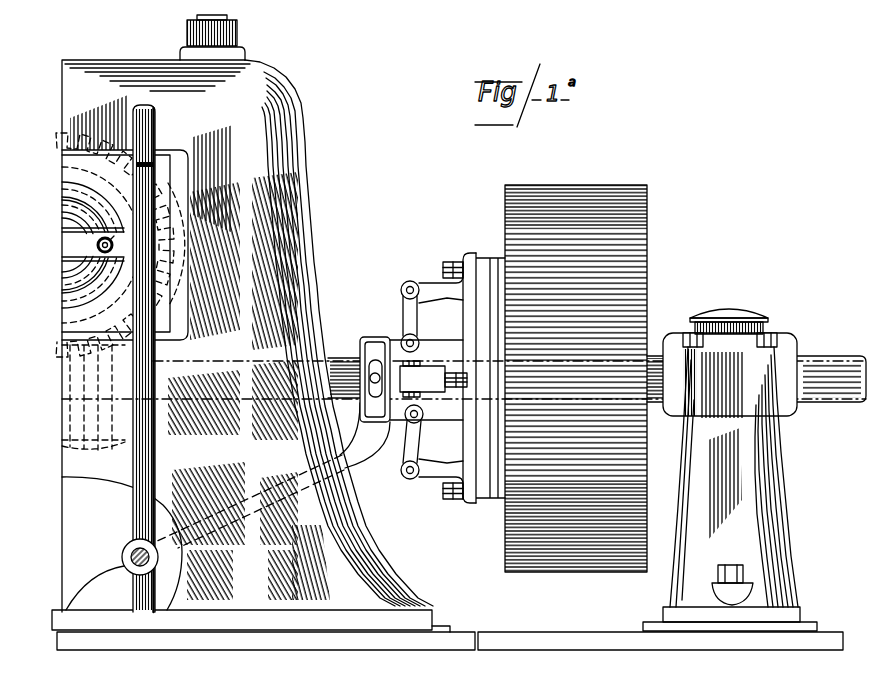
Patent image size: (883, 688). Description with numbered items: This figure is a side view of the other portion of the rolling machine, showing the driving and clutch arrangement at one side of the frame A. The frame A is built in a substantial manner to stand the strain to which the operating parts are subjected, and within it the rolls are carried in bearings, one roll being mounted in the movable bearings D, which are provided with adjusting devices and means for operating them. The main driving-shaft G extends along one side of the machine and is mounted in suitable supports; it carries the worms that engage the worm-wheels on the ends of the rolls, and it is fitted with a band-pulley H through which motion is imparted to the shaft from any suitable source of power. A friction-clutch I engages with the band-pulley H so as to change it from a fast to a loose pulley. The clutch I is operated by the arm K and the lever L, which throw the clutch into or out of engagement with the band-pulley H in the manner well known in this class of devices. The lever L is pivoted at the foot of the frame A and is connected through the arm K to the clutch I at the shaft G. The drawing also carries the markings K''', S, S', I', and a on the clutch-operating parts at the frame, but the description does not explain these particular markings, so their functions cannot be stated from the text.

The frame of the machine A is at (251, 323).
The movable bearings D is at (122, 529).
The lever L is at (140, 358).
The arm K is at (217, 340).
The pin K''' is at (96, 245).
The spring S is at (77, 223).
The spring S' is at (77, 267).
The disk I' is at (74, 253).
The stud a is at (116, 233).
The friction-clutch I is at (425, 380).
The band-pulley H is at (576, 378).
The main driving-shaft G is at (756, 379).